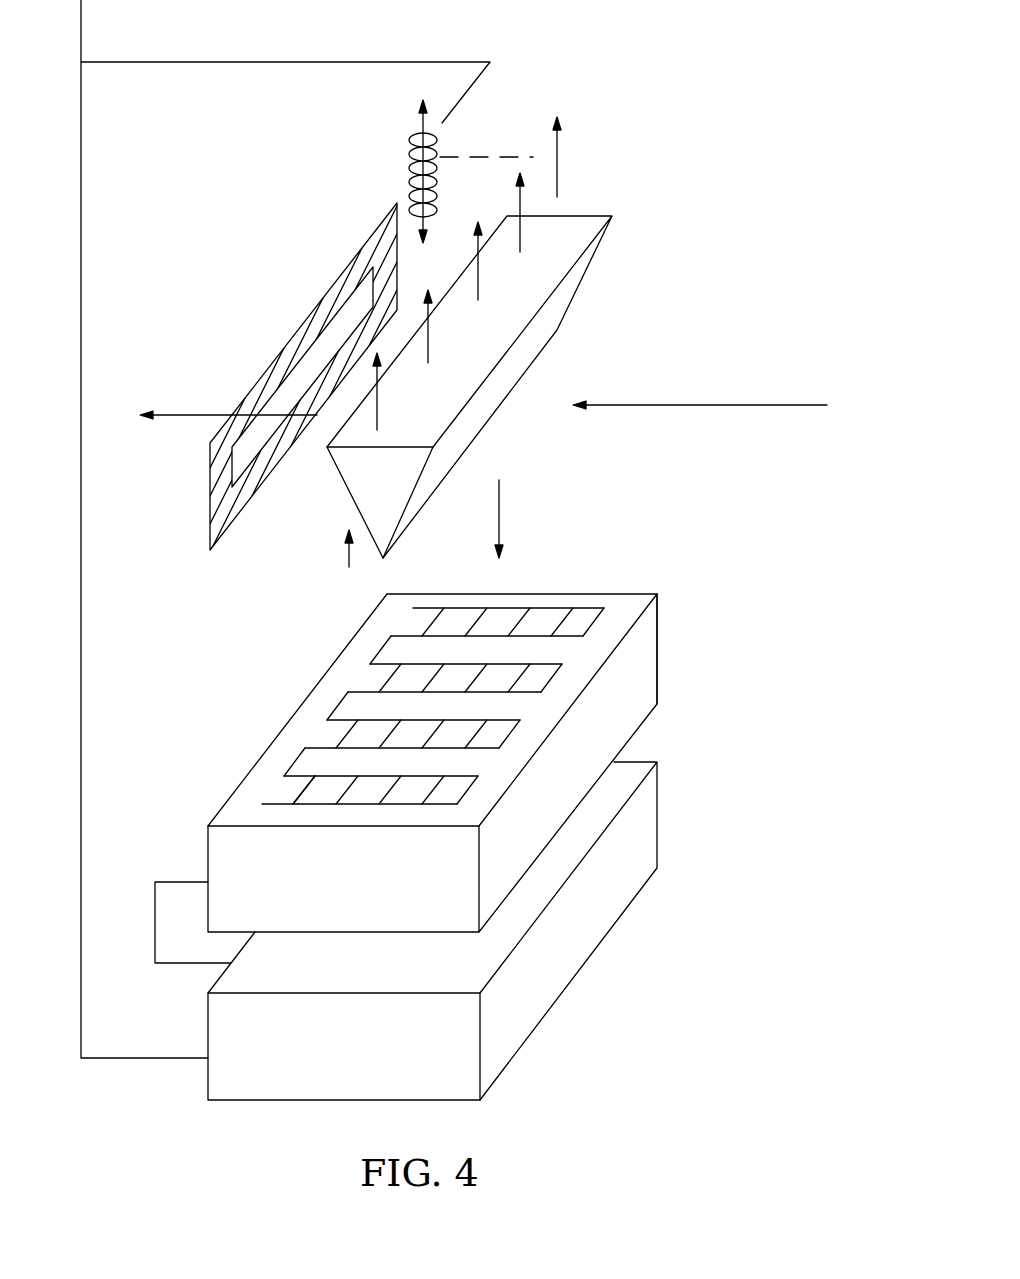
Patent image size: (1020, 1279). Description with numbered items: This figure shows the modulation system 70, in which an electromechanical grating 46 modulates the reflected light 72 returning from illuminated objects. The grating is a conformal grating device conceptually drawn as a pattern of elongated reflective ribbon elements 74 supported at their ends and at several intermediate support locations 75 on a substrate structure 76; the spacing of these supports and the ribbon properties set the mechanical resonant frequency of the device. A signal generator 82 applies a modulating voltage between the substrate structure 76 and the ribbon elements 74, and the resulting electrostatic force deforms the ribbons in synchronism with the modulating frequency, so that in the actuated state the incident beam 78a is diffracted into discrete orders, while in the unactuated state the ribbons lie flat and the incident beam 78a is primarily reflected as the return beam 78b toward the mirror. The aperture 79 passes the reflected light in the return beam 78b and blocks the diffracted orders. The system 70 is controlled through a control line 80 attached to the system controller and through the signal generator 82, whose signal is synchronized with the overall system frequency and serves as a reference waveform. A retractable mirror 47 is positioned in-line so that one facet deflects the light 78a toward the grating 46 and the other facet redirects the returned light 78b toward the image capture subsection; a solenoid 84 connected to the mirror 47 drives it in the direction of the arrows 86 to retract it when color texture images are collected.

The modulation system 70 is at (726, 135).
The reflected light 72 is at (717, 407).
The electromechanical grating 46 is at (617, 608).
The retractable mirror 47 is at (575, 254).
The ribbon elements 74 is at (546, 612).
The intermediate support locations 75 is at (302, 795).
The substrate structure 76 is at (657, 627).
The incident beam 78a is at (499, 483).
The return beam 78b is at (349, 575).
The aperture 79 is at (279, 355).
The control line 80 is at (81, 583).
The signal generator 82 is at (543, 1013).
The solenoid 84 is at (402, 163).
The arrows 86 is at (557, 125).